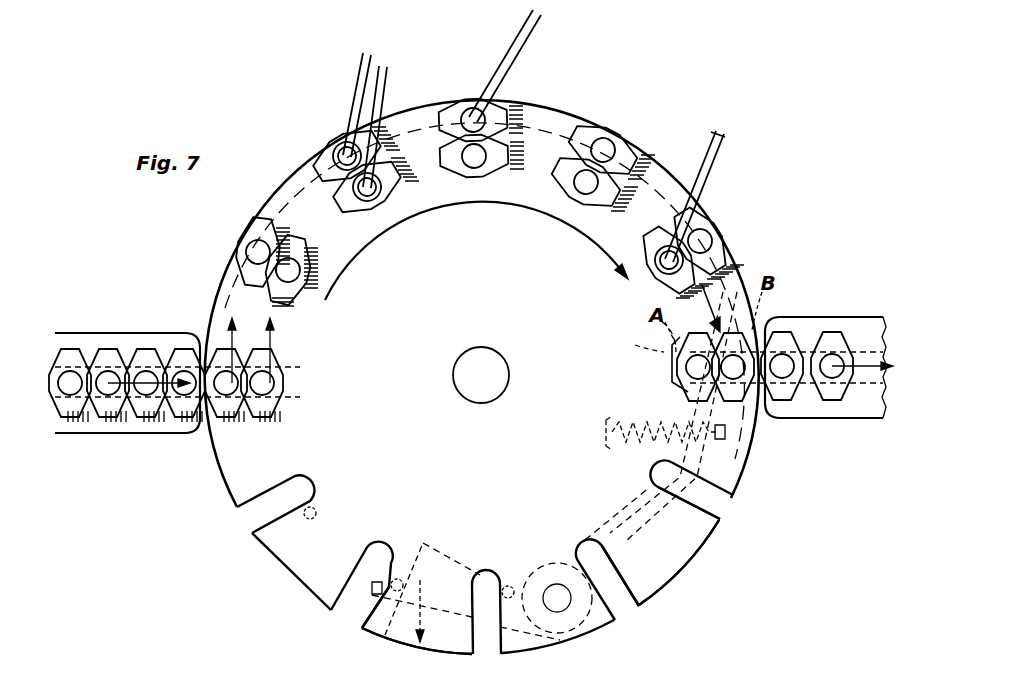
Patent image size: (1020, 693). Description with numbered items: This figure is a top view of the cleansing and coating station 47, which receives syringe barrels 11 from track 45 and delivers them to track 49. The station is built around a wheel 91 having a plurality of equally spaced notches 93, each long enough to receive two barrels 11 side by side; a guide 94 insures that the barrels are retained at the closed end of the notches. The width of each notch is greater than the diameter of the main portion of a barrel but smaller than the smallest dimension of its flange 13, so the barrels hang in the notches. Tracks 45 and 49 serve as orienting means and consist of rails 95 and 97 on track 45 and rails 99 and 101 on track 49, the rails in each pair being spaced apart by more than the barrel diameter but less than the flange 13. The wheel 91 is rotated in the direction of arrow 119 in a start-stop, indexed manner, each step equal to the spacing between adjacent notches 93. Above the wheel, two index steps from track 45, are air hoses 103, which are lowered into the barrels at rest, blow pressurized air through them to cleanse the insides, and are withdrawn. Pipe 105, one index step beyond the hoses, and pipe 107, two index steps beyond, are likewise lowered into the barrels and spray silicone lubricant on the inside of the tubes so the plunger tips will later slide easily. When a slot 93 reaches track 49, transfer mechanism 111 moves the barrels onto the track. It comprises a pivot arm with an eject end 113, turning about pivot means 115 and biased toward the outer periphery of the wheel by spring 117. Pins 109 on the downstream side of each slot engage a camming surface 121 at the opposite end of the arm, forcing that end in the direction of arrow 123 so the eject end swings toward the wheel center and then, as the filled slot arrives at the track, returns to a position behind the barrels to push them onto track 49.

The chain link 11 is at (95, 420).
The flange 13 is at (315, 247).
The track 45 is at (78, 333).
The station 47 is at (250, 573).
The track 49 is at (810, 345).
The wheel 91 is at (690, 545).
The notches 93 is at (250, 523).
The guide 94 is at (278, 185).
The rail 95 is at (130, 433).
The rail 97 is at (123, 333).
The rail 99 is at (795, 317).
The rail 101 is at (810, 418).
The air hoses 103 is at (366, 82).
The pipe 105 is at (532, 58).
The pipe 107 is at (705, 162).
The pins 109 is at (318, 510).
The transfer mechanism 111 is at (640, 520).
The eject end 113 is at (642, 357).
The pivot means 115 is at (600, 625).
The spring 117 is at (655, 412).
The arrow 119 is at (447, 208).
The camming surface 121 is at (455, 560).
The arrow 123 is at (385, 635).